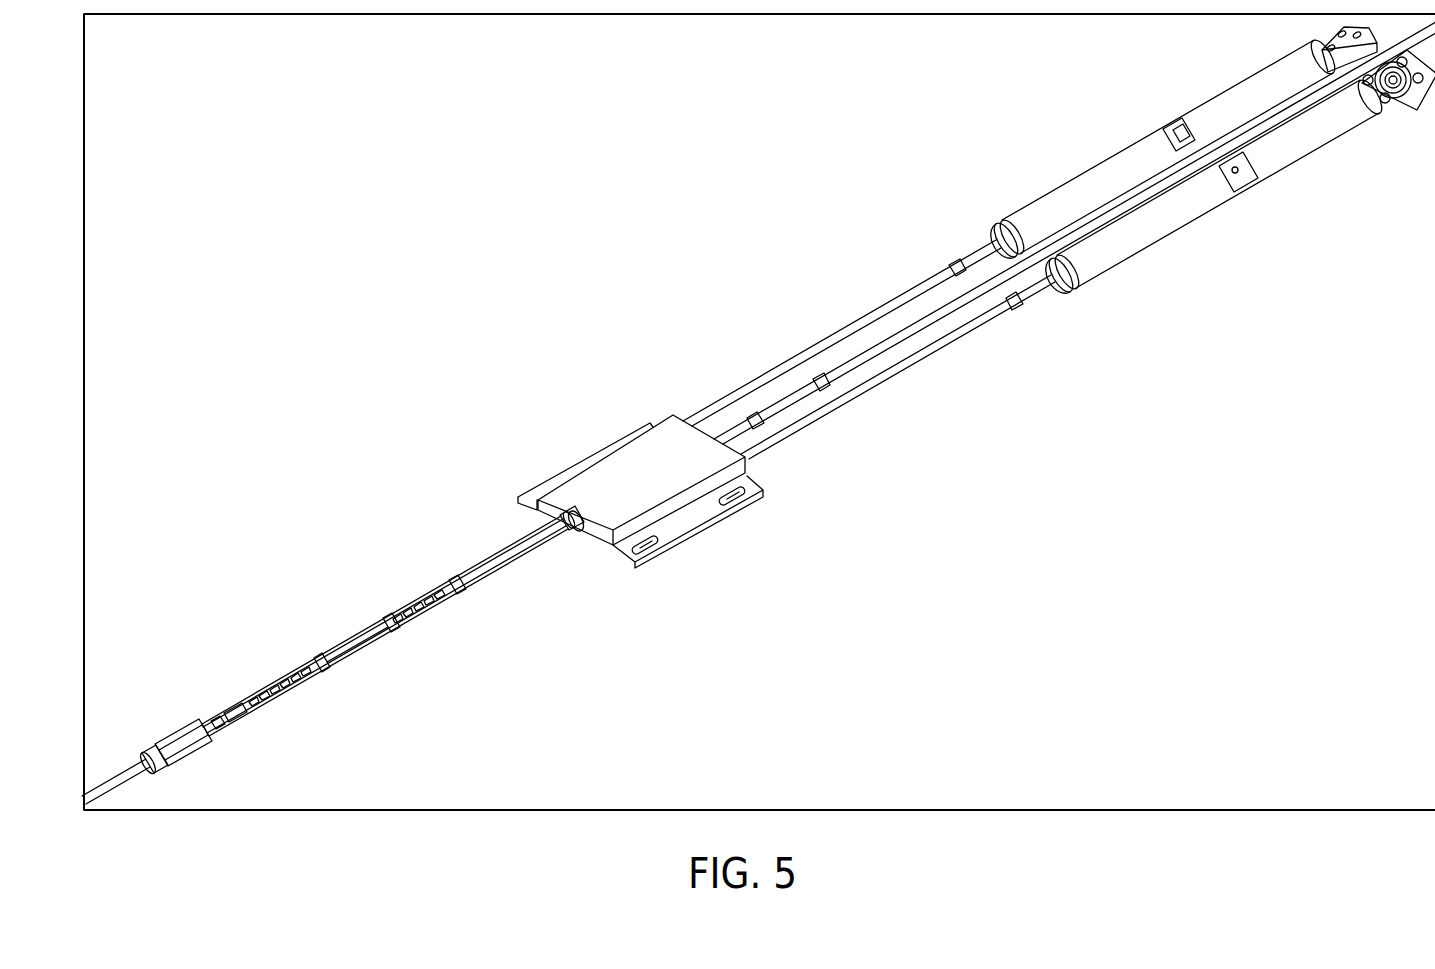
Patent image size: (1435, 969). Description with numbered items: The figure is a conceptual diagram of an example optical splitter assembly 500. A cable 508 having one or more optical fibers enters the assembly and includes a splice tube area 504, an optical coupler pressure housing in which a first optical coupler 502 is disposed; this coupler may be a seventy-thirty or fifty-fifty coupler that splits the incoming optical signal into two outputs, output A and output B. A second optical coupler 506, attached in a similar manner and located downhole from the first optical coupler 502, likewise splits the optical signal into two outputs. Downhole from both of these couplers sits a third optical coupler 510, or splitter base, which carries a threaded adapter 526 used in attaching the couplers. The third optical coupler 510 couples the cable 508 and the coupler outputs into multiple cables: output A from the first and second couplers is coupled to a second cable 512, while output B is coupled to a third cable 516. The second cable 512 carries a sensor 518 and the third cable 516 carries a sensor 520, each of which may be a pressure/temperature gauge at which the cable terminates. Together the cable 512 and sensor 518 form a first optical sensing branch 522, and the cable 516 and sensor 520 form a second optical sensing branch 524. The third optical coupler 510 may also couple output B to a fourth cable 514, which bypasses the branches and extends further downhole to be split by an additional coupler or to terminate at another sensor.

The optical splitter assembly 500 is at (338, 118).
The first optical coupler 502 is at (275, 687).
The splice tube area 504 is at (385, 678).
The second optical coupler 506 is at (427, 594).
The cable 508 is at (123, 777).
The third optical coupler 510 is at (688, 523).
The second cable 512 is at (738, 386).
The fourth cable 514 is at (908, 340).
The third cable 516 is at (802, 438).
The sensor 518 is at (1048, 194).
The sensor 520 is at (1147, 254).
The first optical sensing branch 522 is at (934, 225).
The second optical sensing branch 524 is at (1001, 369).
The threaded adapter 526 is at (576, 540).